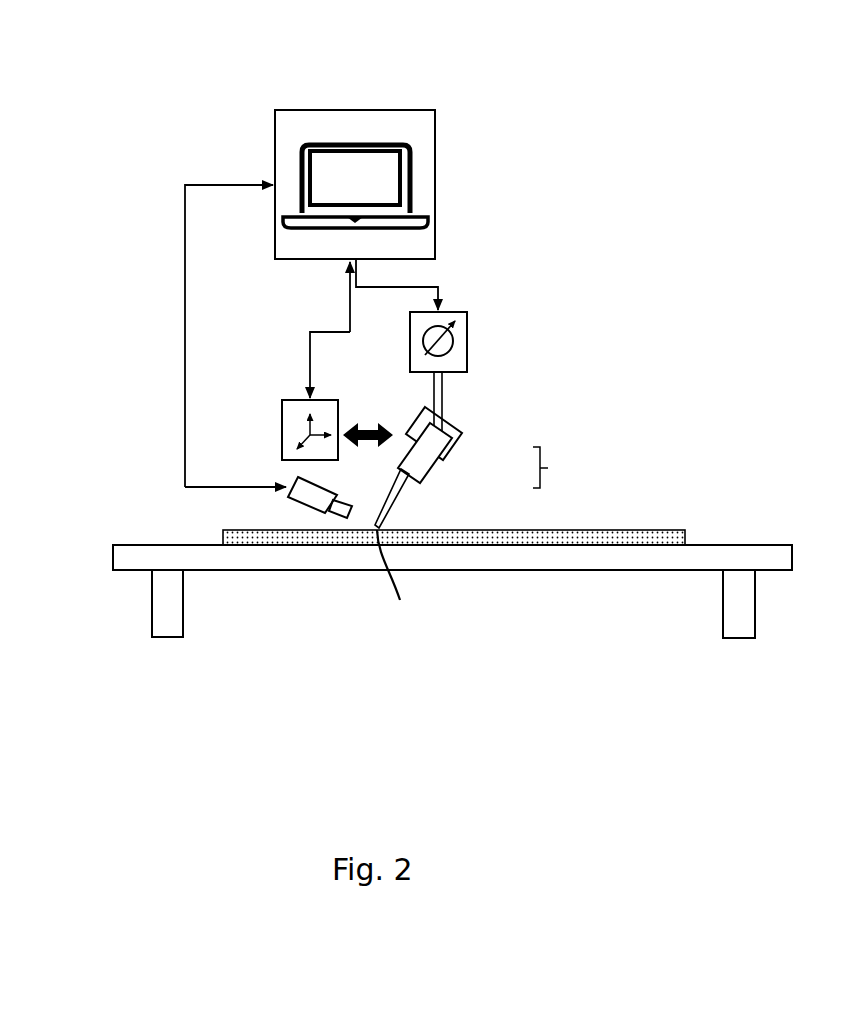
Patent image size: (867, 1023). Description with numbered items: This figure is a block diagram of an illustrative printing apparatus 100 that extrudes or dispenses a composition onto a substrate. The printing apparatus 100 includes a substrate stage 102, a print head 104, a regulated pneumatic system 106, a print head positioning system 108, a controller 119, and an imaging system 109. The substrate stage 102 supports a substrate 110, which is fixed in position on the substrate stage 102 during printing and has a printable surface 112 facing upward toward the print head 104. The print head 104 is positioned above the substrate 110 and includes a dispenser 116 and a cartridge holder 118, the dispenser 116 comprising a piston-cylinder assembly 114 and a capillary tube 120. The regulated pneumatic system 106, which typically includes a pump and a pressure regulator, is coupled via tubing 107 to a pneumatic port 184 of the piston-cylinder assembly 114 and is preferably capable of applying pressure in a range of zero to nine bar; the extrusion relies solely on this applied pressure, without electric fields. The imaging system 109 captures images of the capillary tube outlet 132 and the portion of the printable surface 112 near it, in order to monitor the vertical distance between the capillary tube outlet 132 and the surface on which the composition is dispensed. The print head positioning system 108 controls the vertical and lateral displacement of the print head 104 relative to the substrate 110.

The printing apparatus 100 is at (245, 100).
The substrate stage 102 is at (112, 558).
The print head 104 is at (588, 436).
The regulated pneumatic system 106 is at (469, 341).
The tubing 107 is at (446, 384).
The print head positioning system 108 is at (281, 423).
The imaging system 109 is at (286, 495).
The substrate 110 is at (689, 539).
The printable surface 112 is at (603, 527).
The piston-cylinder assembly 114 is at (450, 454).
The dispenser 116 is at (564, 467).
The cartridge holder 118 is at (467, 437).
The controller 119 is at (438, 169).
The capillary tube 120 is at (406, 490).
The capillary tube outlet 132 is at (399, 580).
The pneumatic port 184 is at (441, 425).